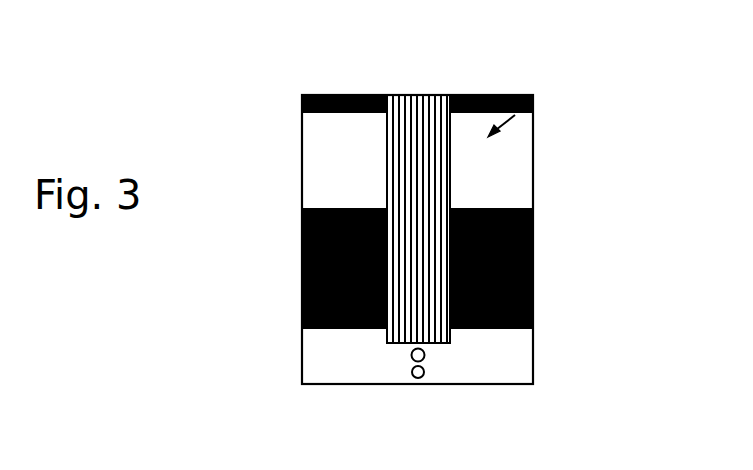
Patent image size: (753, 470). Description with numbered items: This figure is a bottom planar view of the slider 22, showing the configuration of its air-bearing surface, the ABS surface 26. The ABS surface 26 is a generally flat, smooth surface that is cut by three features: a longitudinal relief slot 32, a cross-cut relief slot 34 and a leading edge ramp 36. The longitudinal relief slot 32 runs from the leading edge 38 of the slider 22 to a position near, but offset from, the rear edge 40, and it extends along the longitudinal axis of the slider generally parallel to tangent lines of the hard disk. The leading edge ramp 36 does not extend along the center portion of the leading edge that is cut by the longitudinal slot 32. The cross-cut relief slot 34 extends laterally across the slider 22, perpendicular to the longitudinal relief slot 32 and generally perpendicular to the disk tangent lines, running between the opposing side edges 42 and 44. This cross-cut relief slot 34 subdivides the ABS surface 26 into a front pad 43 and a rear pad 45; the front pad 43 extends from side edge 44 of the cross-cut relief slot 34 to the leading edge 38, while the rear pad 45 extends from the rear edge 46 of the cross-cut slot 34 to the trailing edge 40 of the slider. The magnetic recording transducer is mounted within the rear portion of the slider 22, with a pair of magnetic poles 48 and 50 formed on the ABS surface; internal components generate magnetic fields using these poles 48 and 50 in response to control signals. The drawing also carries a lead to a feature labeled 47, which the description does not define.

The slider 22 is at (388, 87).
The ABS surface 26 is at (552, 102).
The longitudinal relief slot 32 is at (451, 199).
The cross-cut relief slot 34 is at (459, 268).
The leading edge ramp 36 is at (565, 66).
The leading edge 38 is at (376, 78).
The rear edge 40 is at (517, 415).
The side edge 42 is at (273, 211).
The front pad 43 is at (562, 128).
The side edge 44 is at (459, 239).
The rear pad 45 is at (562, 396).
The rear edge of cross-cut slot 46 is at (563, 354).
The upper surface of opaque layer 47 is at (565, 192).
The magnetic pole 48 is at (365, 387).
The magnetic pole 50 is at (380, 410).